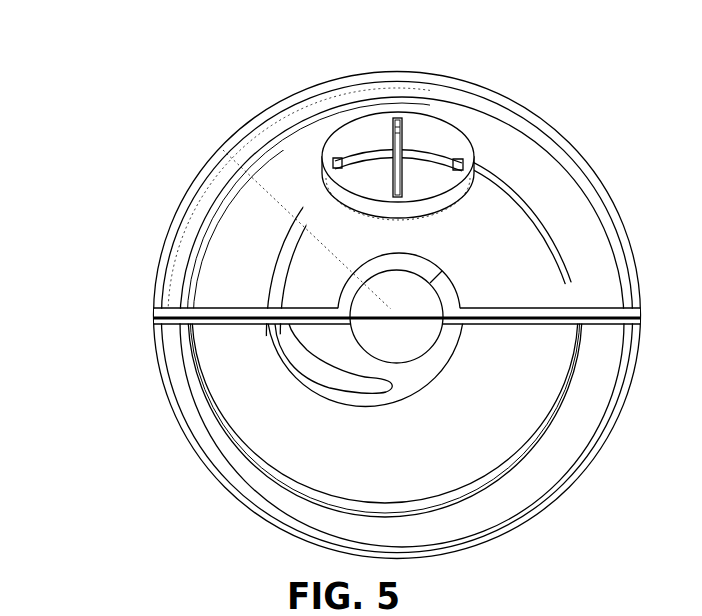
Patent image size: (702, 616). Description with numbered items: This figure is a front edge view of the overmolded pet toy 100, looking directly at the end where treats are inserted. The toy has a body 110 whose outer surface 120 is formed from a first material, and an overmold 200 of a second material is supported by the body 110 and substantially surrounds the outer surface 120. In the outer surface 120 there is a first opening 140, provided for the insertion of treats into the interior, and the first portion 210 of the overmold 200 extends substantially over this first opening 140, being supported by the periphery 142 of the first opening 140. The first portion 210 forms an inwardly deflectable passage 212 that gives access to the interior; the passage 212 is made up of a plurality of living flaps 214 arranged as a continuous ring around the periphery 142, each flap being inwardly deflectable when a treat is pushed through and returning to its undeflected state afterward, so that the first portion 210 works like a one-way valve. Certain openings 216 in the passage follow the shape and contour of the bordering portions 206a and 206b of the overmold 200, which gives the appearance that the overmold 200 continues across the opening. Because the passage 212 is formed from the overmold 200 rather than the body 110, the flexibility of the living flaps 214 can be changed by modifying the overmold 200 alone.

The pet toy 100 is at (118, 74).
The body 110 is at (207, 430).
The outer surface 120 is at (267, 490).
The first opening 140 is at (500, 118).
The periphery 142 is at (353, 128).
The overmold 200 is at (217, 307).
The bordering portion 206a is at (307, 203).
The bordering portion 206b is at (505, 180).
The first portion 210 is at (427, 133).
The inwardly deflectable passage 212 is at (418, 173).
The living flaps 214 is at (377, 137).
The openings 216 is at (340, 162).